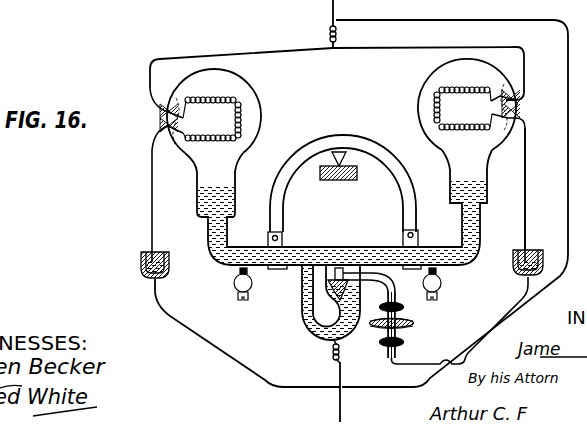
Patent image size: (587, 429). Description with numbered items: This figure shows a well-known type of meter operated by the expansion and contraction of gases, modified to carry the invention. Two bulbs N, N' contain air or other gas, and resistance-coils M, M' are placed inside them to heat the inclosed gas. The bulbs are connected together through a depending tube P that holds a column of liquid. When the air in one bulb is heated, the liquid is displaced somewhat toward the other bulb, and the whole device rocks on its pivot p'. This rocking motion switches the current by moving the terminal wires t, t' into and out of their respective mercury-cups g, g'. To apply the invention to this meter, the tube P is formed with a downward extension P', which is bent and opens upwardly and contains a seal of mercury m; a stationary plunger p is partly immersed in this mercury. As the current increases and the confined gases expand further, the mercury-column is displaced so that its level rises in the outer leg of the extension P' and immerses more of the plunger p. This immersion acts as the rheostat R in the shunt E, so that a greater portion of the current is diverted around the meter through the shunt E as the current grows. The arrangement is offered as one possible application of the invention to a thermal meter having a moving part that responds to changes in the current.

The resistance-coil M is at (212, 119).
The bulb N is at (214, 111).
The bulb N' is at (460, 154).
The resistance-coil M' is at (463, 108).
The shunt E is at (361, 211).
The depending tube P is at (338, 217).
The pivot p' is at (345, 172).
The downward extension P' is at (321, 302).
The stationary plunger p is at (312, 284).
The rheostat R is at (435, 318).
The seal of mercury m is at (348, 351).
The terminal wire t is at (146, 206).
The mercury-cup g is at (149, 265).
The terminal wire t' is at (535, 195).
The mercury-cup g' is at (536, 262).